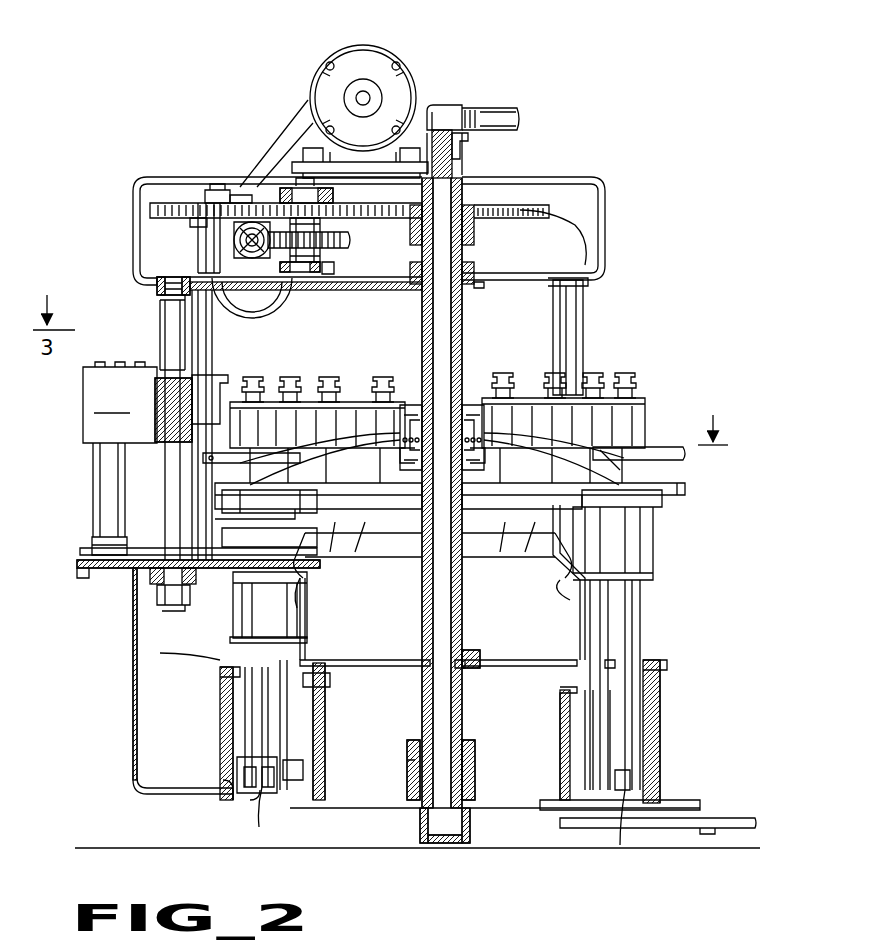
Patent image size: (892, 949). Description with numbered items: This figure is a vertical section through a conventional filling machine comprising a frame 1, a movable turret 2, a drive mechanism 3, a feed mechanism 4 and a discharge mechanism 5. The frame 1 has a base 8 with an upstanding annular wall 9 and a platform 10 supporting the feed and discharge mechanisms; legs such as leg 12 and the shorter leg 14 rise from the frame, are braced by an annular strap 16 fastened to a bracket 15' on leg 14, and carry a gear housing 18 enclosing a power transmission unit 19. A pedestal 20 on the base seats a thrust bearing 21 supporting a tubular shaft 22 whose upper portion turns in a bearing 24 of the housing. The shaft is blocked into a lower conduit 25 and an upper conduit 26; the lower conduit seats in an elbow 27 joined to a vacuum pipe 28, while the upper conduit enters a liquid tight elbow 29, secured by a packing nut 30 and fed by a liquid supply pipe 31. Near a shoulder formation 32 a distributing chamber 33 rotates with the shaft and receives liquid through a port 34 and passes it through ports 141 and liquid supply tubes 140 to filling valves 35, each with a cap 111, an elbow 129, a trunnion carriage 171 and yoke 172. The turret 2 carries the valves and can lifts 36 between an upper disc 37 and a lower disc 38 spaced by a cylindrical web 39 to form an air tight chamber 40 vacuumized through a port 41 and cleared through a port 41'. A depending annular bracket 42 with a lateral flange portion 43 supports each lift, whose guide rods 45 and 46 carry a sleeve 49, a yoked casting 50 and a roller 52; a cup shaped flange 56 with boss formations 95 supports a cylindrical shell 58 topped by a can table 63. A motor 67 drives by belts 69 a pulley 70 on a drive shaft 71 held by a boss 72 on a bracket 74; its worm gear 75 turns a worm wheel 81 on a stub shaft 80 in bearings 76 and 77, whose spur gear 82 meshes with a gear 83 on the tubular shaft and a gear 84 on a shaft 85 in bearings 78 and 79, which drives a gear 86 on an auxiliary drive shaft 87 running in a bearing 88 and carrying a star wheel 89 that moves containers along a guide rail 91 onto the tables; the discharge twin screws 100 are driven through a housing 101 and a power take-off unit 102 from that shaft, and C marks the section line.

The frame 1 is at (581, 326).
The movable turret 2 is at (612, 630).
The drive mechanism 3 is at (584, 219).
The feed mechanism 4 is at (170, 520).
The discharge mechanism 5 is at (110, 546).
The base 8 is at (383, 820).
The upstanding annular wall 9 is at (237, 771).
The platform 10 is at (80, 560).
The leg 12 is at (582, 342).
The leg 14 is at (178, 328).
The bracket 15' is at (115, 457).
The annular strap 16 is at (670, 448).
The gear housing 18 is at (117, 228).
The power transmission unit 19 is at (180, 192).
The pedestal 20 is at (408, 768).
The thrust bearing 21 is at (475, 758).
The tubular shaft 22 is at (422, 338).
The bearing 24 is at (474, 286).
The lower conduit 25 is at (430, 612).
The upper conduit 26 is at (428, 355).
The elbow 27 is at (445, 844).
The pipe 28 is at (583, 840).
The liquid tight elbow 29 is at (436, 105).
The packing nut 30 is at (468, 162).
The liquid supply pipe 31 is at (510, 112).
The shoulder formation 32 is at (430, 506).
The distributing chamber 33 is at (465, 408).
The port 34 is at (422, 427).
The filling valve 35 is at (310, 400).
The can lift 36 is at (252, 719).
The upper disc 37 is at (680, 490).
The lower disc 38 is at (212, 657).
The cylindrical web 39 is at (578, 608).
The air tight chamber 40 is at (362, 603).
The port 41 is at (477, 611).
The port 41' is at (481, 650).
The depending annular bracket 42 is at (320, 717).
The lateral flange portion 43 is at (270, 815).
The guide rod 45 is at (292, 705).
The guide rod 46 is at (640, 775).
The sleeve 49 is at (247, 744).
The yoked casting 50 is at (298, 774).
The ball bearing roller 52 is at (257, 778).
The cup shaped flange 56 is at (228, 637).
The cylindrical shell 58 is at (249, 605).
The can table 63 is at (192, 585).
The motor 67 is at (357, 68).
The belts 69 is at (302, 134).
The pulley 70 is at (280, 286).
The drive shaft 71 is at (252, 256).
The boss 72 is at (248, 241).
The bracket 74 is at (230, 188).
The worm gear 75 is at (260, 257).
The bearing 76 is at (300, 188).
The bearing 77 is at (332, 272).
The bearing 78 is at (238, 196).
The bearing 79 is at (260, 292).
The stub shaft 80 is at (304, 273).
The worm wheel 81 is at (348, 241).
The spur gear 82 is at (322, 223).
The gear 83 is at (475, 221).
The gear 84 is at (200, 198).
The shaft 85 is at (160, 249).
The gear 86 is at (190, 229).
The auxiliary drive shaft 87 is at (204, 347).
The bearing 88 is at (182, 310).
The star wheel 89 is at (190, 540).
The guide rail 91 is at (150, 573).
The boss formation 95 is at (292, 662).
The twin screws 100 is at (88, 578).
The housing 101 is at (120, 402).
The power take-off unit 102 is at (210, 396).
The cap 111 is at (217, 500).
The elbow 129 is at (350, 531).
The liquid supply tube 140 is at (513, 532).
The port 141 is at (432, 426).
The trunnion carriage 171 is at (433, 555).
The yoke 172 is at (644, 432).
The curve C is at (305, 563).